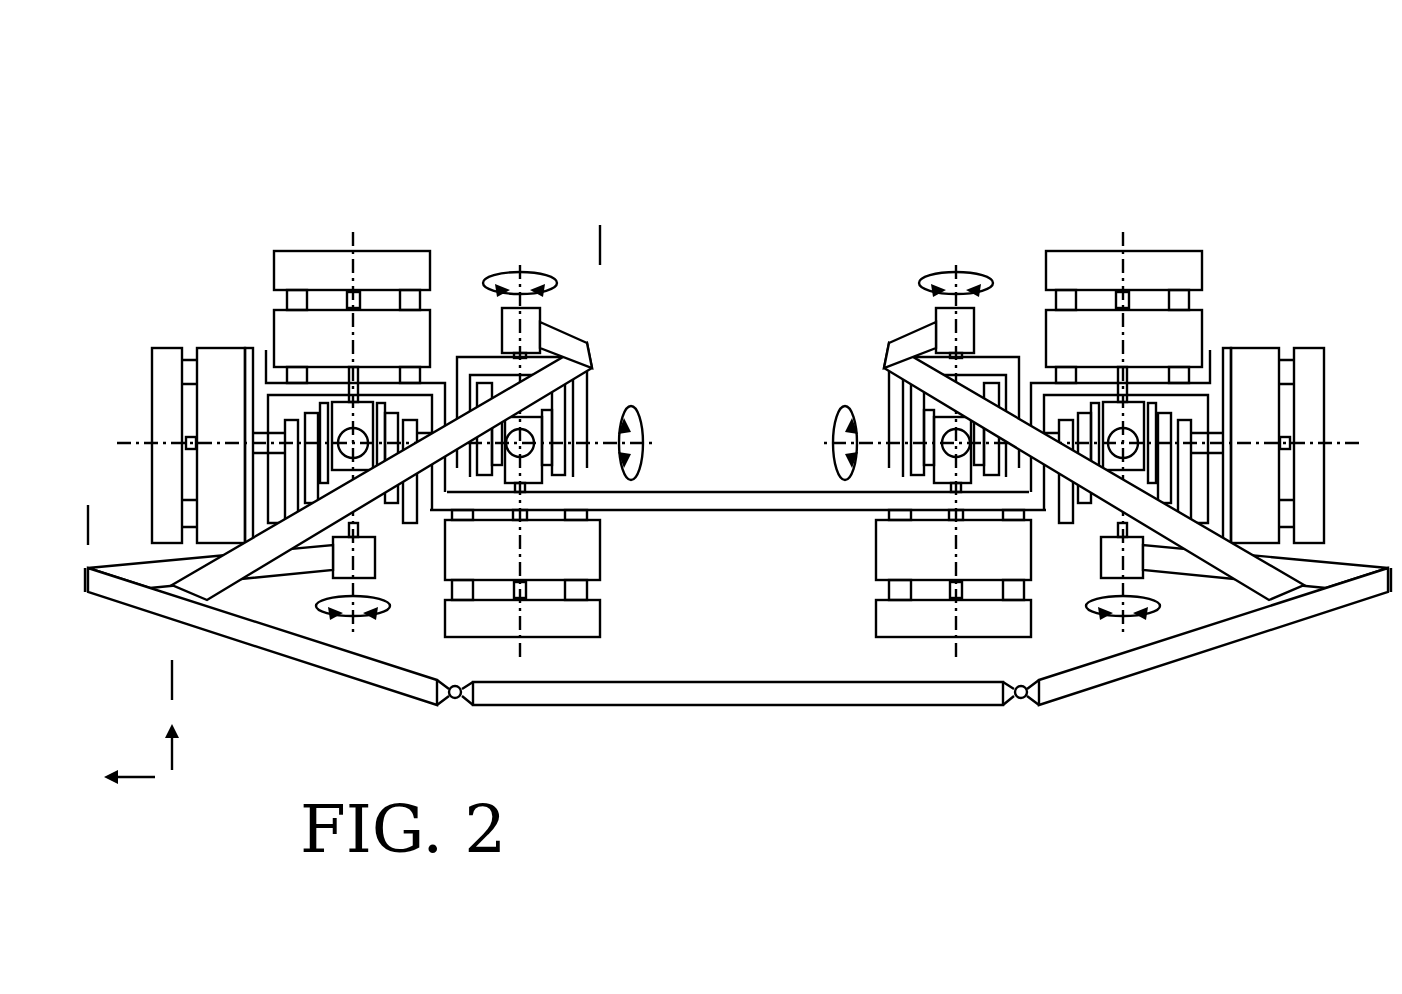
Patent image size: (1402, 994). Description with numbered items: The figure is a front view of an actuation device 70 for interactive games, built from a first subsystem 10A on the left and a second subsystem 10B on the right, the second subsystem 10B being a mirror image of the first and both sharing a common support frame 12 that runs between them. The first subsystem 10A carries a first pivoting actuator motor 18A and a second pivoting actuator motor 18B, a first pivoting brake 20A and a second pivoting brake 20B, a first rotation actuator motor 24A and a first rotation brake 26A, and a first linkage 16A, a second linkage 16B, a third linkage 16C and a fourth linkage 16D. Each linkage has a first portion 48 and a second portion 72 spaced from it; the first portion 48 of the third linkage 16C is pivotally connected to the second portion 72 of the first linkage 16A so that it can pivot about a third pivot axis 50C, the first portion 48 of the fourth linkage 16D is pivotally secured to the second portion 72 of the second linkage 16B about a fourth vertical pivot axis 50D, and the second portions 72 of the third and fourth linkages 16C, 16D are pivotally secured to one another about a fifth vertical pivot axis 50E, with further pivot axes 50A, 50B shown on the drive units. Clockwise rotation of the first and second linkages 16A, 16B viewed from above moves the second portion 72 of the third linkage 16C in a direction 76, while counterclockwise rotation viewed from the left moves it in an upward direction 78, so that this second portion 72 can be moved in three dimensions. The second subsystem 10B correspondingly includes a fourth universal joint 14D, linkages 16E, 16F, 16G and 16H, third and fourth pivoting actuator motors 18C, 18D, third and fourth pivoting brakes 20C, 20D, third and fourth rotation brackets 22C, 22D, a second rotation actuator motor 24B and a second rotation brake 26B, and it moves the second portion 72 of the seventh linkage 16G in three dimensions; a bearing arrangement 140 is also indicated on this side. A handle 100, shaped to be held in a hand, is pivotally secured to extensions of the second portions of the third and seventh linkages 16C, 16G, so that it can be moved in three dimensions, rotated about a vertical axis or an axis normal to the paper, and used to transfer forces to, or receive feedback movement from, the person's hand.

The actuation device 70 is at (733, 437).
The first subsystem 10A is at (387, 402).
The second subsystem 10B is at (1099, 401).
The support frame 12 is at (735, 492).
The fourth universal joint 14D is at (938, 462).
The first linkage 16A is at (265, 577).
The second linkage 16B is at (590, 340).
The third linkage 16C is at (142, 612).
The fourth linkage 16D is at (392, 487).
The first linkage of second subsystem 16E is at (1325, 562).
The second linkage of second subsystem 16F is at (922, 330).
The seventh linkage 16G is at (1368, 598).
The fourth linkage of second subsystem 16H is at (1213, 555).
The first pivoting actuator motor 18A is at (430, 256).
The second pivoting actuator motor 18B is at (600, 622).
The third pivoting actuator motor 18C is at (1202, 256).
The fourth pivoting actuator motor 18D is at (876, 622).
The first pivoting brake 20A is at (430, 324).
The second pivoting brake 20B is at (600, 556).
The third pivoting brake 20C is at (1202, 324).
The fourth pivoting brake 20D is at (876, 556).
The third rotation bracket 22C is at (1126, 459).
The fourth rotation bracket 22D is at (990, 376).
The first rotation actuator motor 24A is at (178, 348).
The second rotation actuator motor 24B is at (1330, 348).
The first rotation brake 26A is at (240, 348).
The second rotation brake 26B is at (1285, 338).
The first portion 48 is at (585, 340).
The first pivot axis 50A is at (352, 240).
The second pivot axis 50B is at (521, 652).
The third pivot axis 50C is at (98, 497).
The fourth vertical pivot axis 50D is at (600, 258).
The fifth vertical pivot axis 50E is at (172, 690).
The second portion 72 is at (135, 568).
The direction 76 is at (137, 768).
The upward direction 78 is at (188, 743).
The handle 100 is at (756, 707).
The bearing stack 140 is at (1125, 462).